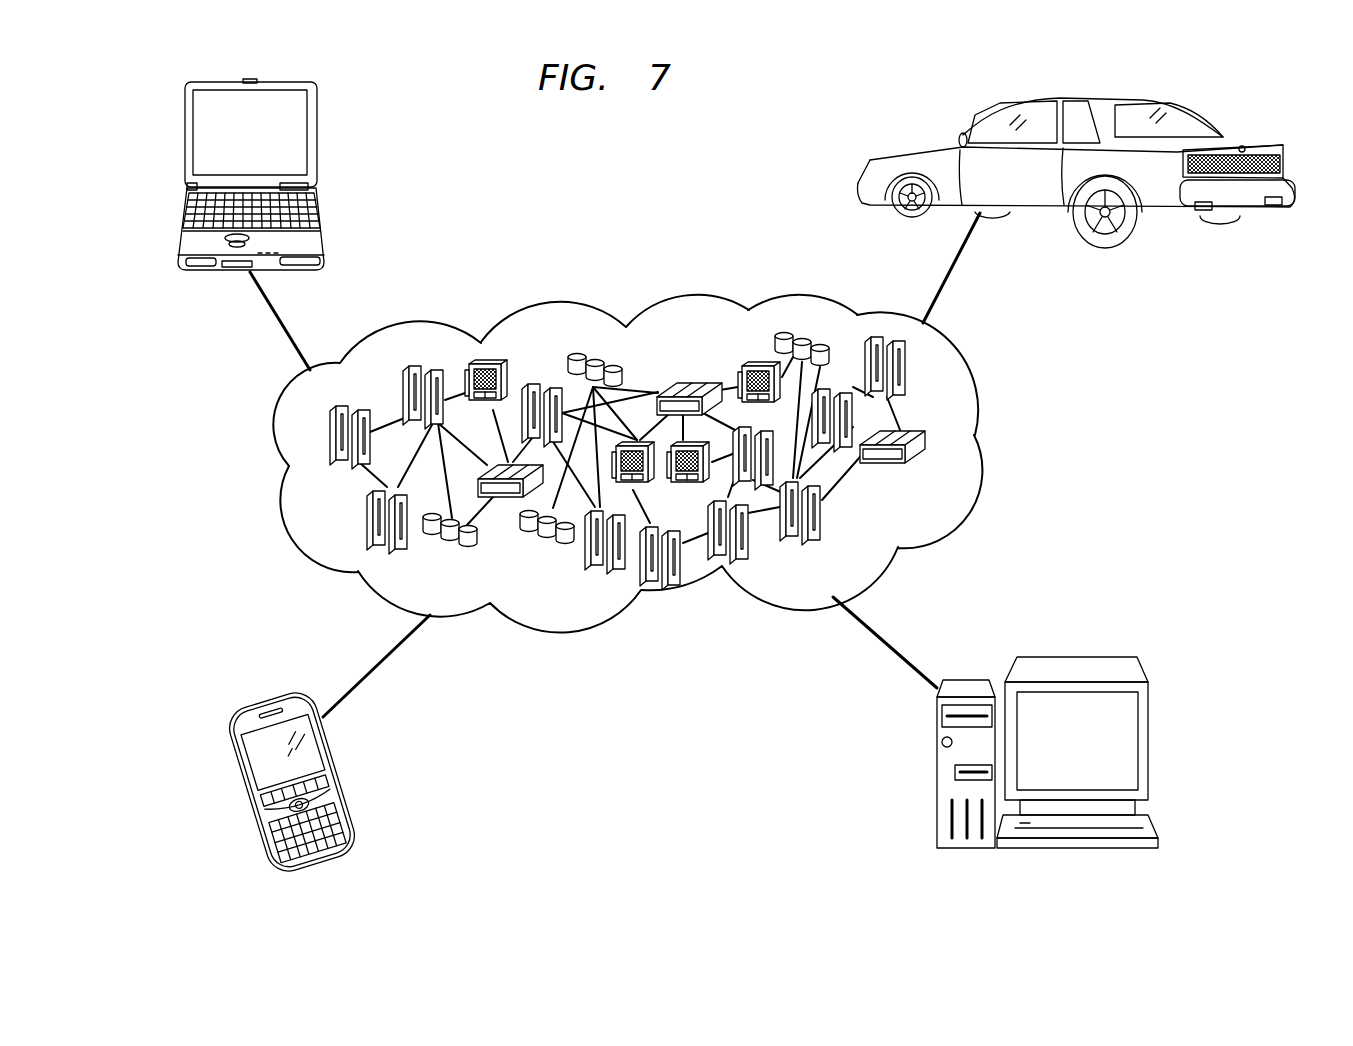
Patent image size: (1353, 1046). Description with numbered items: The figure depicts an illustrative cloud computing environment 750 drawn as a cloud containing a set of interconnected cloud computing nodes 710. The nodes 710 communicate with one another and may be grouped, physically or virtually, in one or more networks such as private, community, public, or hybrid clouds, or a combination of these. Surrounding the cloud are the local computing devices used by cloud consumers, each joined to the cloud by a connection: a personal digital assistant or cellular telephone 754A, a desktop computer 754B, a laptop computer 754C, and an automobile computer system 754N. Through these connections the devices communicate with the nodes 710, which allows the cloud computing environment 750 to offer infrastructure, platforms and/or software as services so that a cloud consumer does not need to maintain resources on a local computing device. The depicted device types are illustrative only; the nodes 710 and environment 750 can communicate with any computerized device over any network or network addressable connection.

The cloud computing environment 750 is at (973, 391).
The cloud computing nodes 710 is at (940, 478).
The cellular telephone 754A is at (232, 766).
The desktop computer 754B is at (1080, 657).
The laptop computer 754C is at (187, 127).
The automobile computer system 754N is at (1255, 139).